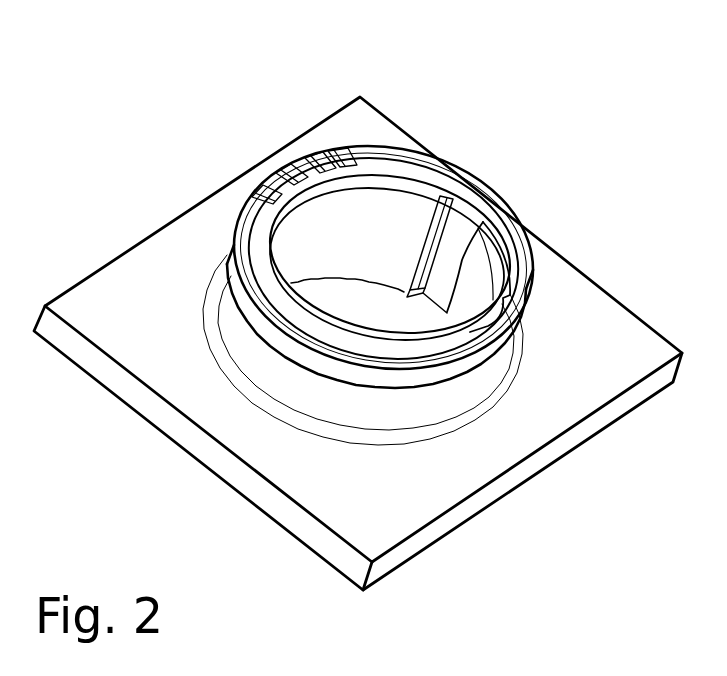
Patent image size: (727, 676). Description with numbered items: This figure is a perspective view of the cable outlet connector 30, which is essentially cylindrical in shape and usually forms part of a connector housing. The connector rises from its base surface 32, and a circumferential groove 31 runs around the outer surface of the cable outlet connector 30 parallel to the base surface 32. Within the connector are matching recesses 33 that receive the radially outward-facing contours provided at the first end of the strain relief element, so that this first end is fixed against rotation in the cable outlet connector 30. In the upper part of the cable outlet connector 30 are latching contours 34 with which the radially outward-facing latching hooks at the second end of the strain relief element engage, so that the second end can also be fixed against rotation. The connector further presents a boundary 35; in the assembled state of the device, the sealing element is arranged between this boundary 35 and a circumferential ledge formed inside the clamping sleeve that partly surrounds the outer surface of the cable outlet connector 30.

The cable outlet connector 30 is at (222, 148).
The circumferential groove 31 is at (474, 375).
The base surface 32 is at (167, 363).
The recesses 33 is at (461, 227).
The latching contours 34 is at (291, 178).
The boundary 35 is at (260, 233).